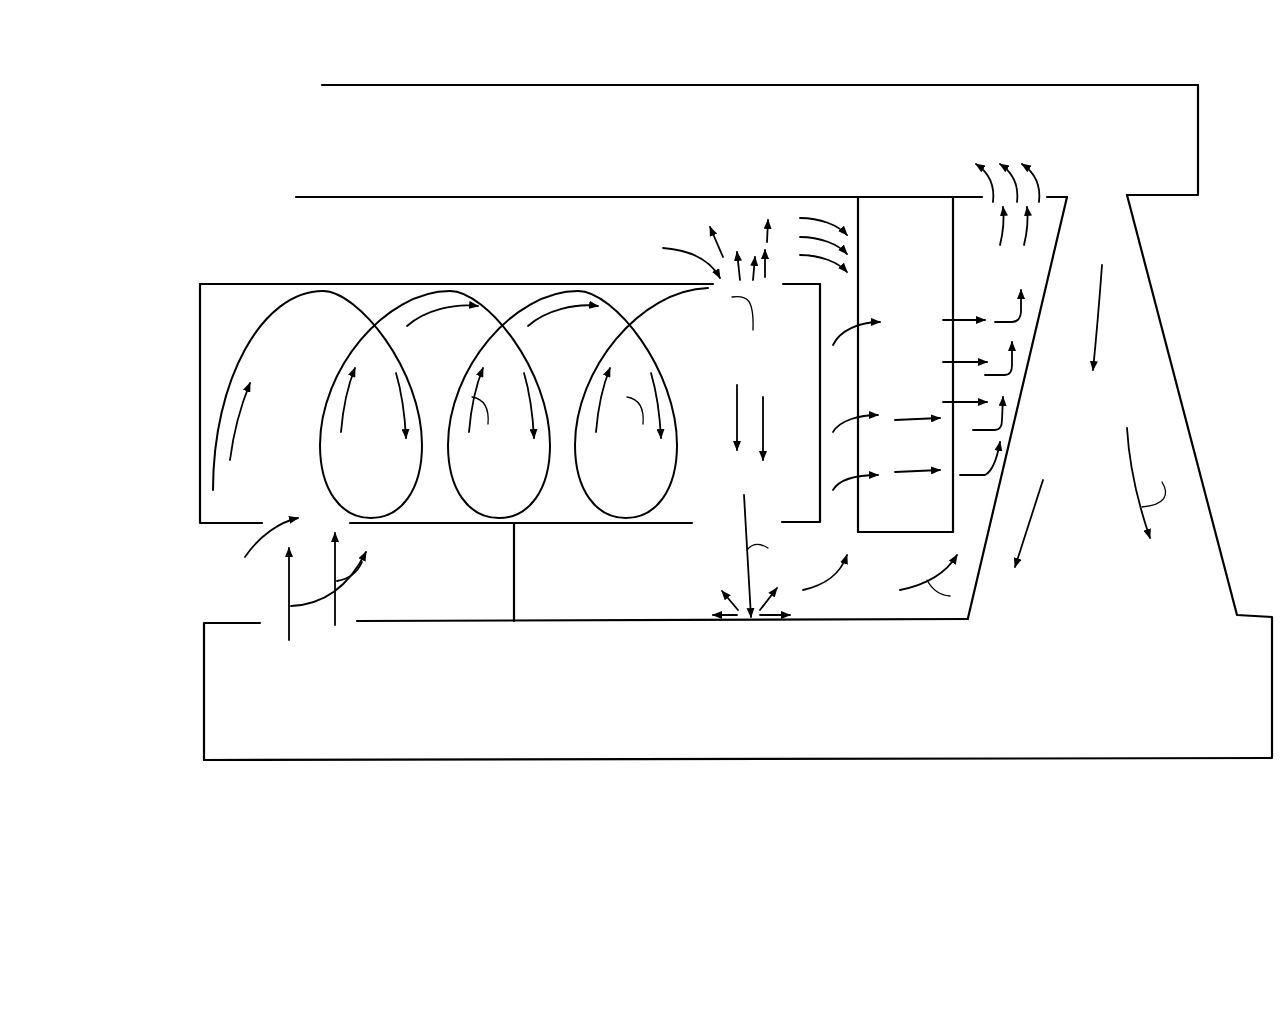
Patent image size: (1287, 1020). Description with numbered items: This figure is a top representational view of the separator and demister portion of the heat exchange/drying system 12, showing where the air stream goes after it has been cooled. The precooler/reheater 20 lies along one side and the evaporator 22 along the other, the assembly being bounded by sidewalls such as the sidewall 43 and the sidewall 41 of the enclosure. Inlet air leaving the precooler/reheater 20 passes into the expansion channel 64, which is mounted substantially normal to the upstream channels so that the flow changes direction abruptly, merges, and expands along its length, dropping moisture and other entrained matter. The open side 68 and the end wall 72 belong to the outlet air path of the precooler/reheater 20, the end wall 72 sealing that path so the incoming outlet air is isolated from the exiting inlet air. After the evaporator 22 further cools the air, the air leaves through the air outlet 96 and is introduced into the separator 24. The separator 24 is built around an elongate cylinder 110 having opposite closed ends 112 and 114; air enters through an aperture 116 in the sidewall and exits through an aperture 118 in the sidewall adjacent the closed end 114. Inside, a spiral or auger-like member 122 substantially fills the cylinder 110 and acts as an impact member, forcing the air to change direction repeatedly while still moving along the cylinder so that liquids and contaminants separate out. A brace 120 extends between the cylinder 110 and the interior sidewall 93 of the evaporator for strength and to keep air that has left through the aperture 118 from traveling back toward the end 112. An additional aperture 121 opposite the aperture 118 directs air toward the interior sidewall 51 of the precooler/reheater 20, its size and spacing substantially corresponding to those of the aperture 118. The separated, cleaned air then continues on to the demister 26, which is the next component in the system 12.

The heat exchange/drying system 12 is at (246, 200).
The precooler/reheater 20 is at (610, 168).
The evaporator 22 is at (728, 708).
The separator 24 is at (238, 305).
The demister 26 is at (965, 288).
The sidewall 41 is at (843, 760).
The sidewall 43 is at (833, 85).
The interior sidewall 51 is at (763, 200).
The expansion channel 64 is at (1182, 402).
The open side 68 is at (862, 213).
The end wall 72 is at (862, 245).
The interior sidewall 93 is at (583, 620).
The air outlet 96 is at (354, 616).
The elongate cylinder 110 is at (528, 284).
The closed end 112 is at (210, 403).
The closed end 114 is at (815, 375).
The aperture 116 is at (270, 579).
The aperture 118 is at (728, 520).
The brace 120 is at (513, 580).
The additional aperture 121 is at (674, 255).
The spiral member 122 is at (451, 388).